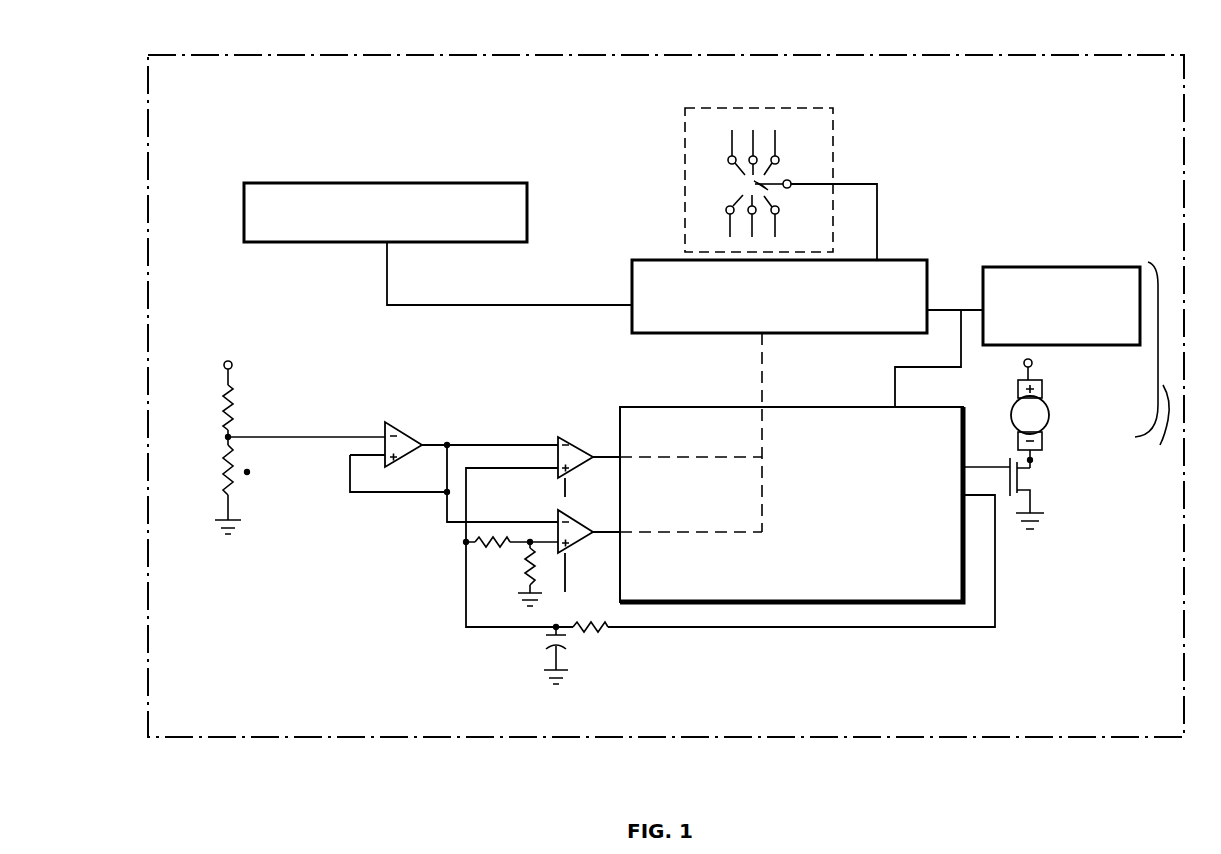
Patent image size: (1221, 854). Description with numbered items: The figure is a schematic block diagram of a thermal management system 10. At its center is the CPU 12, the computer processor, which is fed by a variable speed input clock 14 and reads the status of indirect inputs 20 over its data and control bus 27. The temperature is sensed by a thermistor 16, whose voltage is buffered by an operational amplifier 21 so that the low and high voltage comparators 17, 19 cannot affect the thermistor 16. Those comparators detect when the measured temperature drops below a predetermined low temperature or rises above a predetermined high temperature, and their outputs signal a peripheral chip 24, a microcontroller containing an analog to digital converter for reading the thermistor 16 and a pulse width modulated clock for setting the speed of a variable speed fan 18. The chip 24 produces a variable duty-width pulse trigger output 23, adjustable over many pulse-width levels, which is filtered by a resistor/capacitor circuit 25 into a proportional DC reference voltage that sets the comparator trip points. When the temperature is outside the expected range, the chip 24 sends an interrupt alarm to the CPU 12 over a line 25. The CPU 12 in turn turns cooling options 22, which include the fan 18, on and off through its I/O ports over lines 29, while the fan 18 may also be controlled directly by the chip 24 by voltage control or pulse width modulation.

The thermal management system 10 is at (958, 48).
The CPU 12 is at (880, 260).
The variable speed input clock 14 is at (833, 115).
The thermistor 16 is at (225, 463).
The low voltage comparator 17 is at (584, 437).
The variable speed fan 18 is at (1050, 440).
The high voltage comparator 19 is at (575, 550).
The indirect inputs 20 is at (315, 243).
The operational amplifier 21 is at (402, 423).
The cooling options 22 is at (1076, 368).
The variable duty-width pulse trigger output 23 is at (865, 628).
The peripheral chip 24 is at (780, 604).
The resistor/capacitor circuit and interrupt line 25 is at (762, 382).
The data and control bus 27 is at (468, 307).
The lines 29 is at (940, 308).